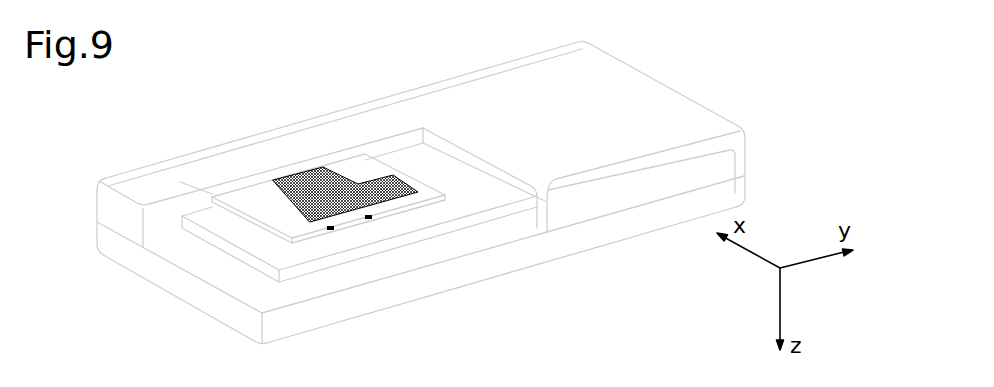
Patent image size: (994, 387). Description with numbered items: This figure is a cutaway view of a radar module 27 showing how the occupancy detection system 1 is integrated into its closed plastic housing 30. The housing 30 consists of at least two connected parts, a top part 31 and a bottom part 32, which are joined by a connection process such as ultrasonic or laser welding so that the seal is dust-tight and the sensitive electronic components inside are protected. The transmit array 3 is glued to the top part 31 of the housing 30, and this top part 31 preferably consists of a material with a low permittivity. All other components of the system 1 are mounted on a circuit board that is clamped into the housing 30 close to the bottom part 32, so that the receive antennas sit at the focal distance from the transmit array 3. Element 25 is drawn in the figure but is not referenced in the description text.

The system 1 is at (313, 164).
The transmit array 3 is at (292, 220).
The carrier plate 25 is at (487, 202).
The radar module 27 is at (497, 192).
The housing 30 is at (744, 108).
The top part 31 is at (188, 163).
The bottom part 32 is at (577, 152).